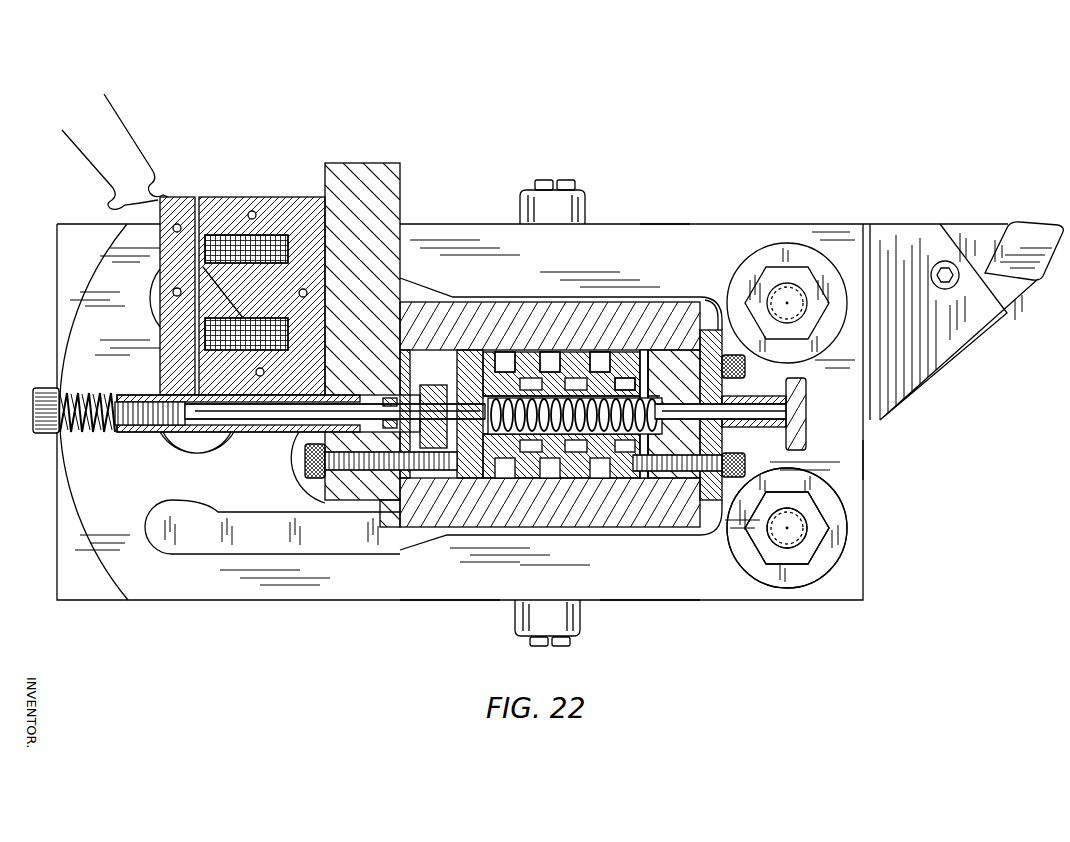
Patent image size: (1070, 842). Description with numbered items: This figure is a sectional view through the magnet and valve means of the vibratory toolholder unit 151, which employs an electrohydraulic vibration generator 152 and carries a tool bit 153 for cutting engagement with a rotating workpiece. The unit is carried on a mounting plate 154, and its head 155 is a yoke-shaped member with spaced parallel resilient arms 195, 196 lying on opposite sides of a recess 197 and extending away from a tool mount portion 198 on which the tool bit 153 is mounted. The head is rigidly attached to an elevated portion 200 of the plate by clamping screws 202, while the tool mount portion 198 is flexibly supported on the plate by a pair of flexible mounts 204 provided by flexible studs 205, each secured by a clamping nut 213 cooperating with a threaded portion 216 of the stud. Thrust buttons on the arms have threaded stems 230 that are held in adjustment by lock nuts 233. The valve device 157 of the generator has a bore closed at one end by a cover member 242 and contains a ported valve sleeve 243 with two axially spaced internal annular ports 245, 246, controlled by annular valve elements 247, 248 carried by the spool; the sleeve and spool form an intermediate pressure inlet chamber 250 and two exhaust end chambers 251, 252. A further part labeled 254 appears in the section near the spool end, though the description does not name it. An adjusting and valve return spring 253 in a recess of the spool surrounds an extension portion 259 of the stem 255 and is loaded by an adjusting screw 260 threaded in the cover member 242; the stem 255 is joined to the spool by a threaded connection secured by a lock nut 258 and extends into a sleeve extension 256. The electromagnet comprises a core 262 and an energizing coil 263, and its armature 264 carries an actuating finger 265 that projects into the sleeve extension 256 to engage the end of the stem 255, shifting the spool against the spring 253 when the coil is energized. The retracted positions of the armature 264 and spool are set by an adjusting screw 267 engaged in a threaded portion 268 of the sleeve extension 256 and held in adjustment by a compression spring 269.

The toolholder unit 151 is at (650, 583).
The vibration generator 152 is at (205, 190).
The tool bit 153 is at (1040, 238).
The mounting plate 154 is at (100, 600).
The head 155 is at (660, 224).
The valve device 157 is at (655, 303).
The resilient arm 195 is at (462, 226).
The resilient arm 196 is at (425, 600).
The recess 197 is at (430, 538).
The tool mount portion 198 is at (846, 461).
The elevated portion 200 is at (222, 552).
The clamping screws 202 is at (186, 440).
The flexible mounts 204 is at (796, 262).
The flexible stud 205 is at (795, 535).
The clamping nut 213 is at (810, 548).
The threaded portion 216 is at (805, 583).
The threaded stem 230 is at (568, 190).
The lock nut 233 is at (585, 212).
The cover member 242 is at (721, 320).
The valve sleeve 243 is at (495, 352).
The annular port 245 is at (583, 352).
The annular port 246 is at (538, 352).
The annular valve element 247 is at (476, 392).
The annular valve element 248 is at (630, 352).
The intermediate valve chamber 250 is at (562, 356).
The end valve chamber 251 is at (667, 352).
The end valve chamber 252 is at (444, 352).
The adjusting and valve return spring 253 is at (615, 398).
The collar 254 is at (452, 372).
The stem 255 is at (376, 404).
The sleeve extension 256 is at (250, 432).
The lock nut 258 is at (413, 440).
The extension portion 259 is at (622, 430).
The adjusting screw 260 is at (806, 411).
The core 262 is at (229, 207).
The energizing coil 263 is at (270, 237).
The armature 264 is at (157, 276).
The actuating finger 265 is at (168, 440).
The adjusting screw 267 is at (48, 390).
The threaded portion 268 is at (142, 397).
The compression spring 269 is at (78, 430).